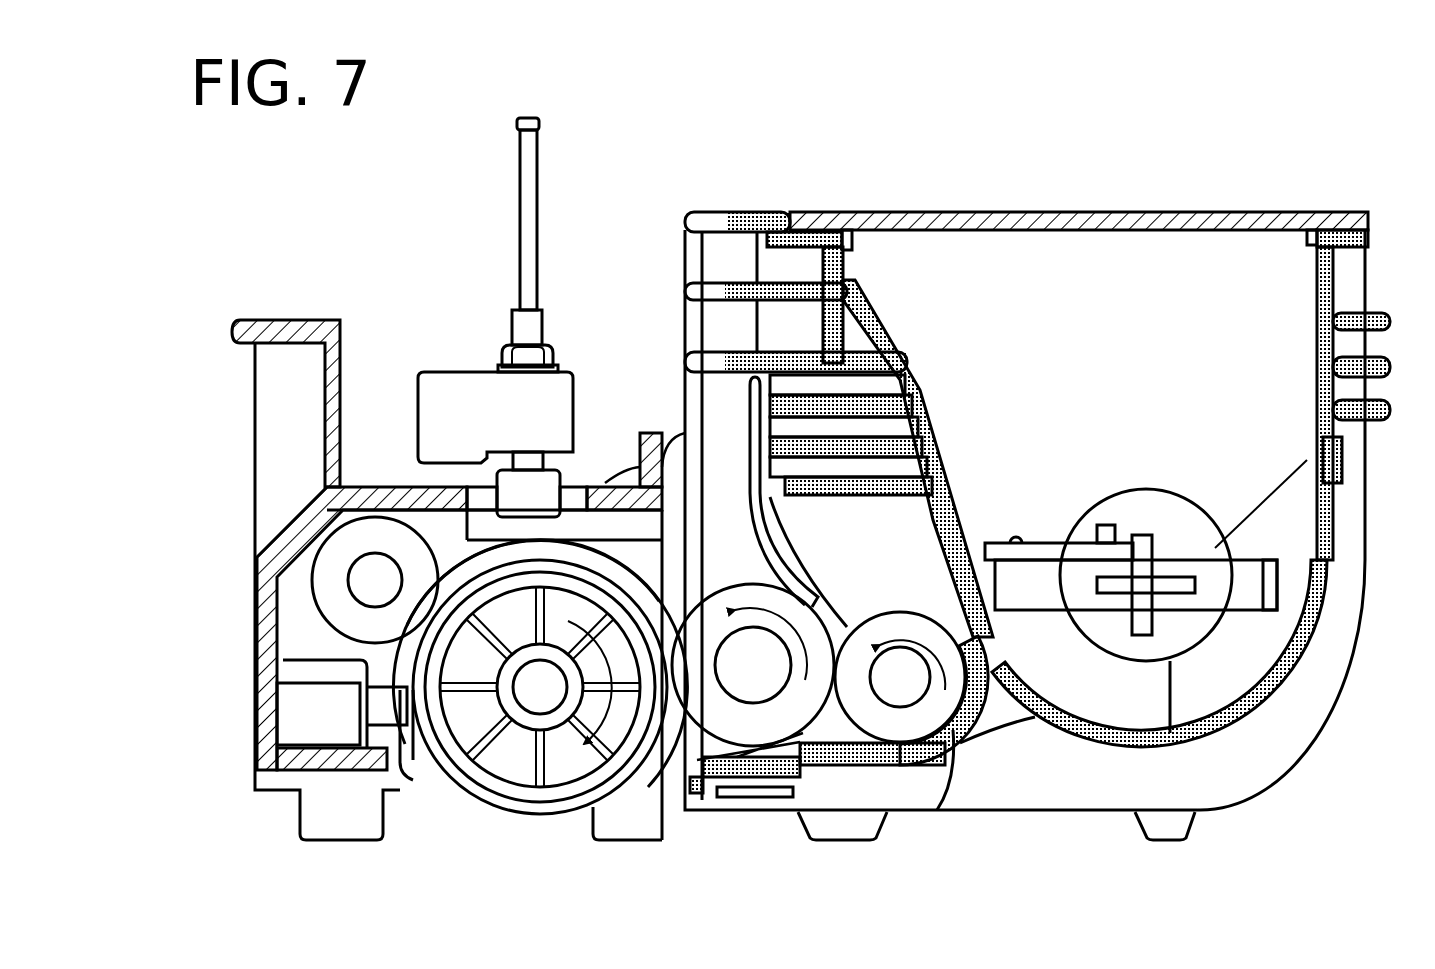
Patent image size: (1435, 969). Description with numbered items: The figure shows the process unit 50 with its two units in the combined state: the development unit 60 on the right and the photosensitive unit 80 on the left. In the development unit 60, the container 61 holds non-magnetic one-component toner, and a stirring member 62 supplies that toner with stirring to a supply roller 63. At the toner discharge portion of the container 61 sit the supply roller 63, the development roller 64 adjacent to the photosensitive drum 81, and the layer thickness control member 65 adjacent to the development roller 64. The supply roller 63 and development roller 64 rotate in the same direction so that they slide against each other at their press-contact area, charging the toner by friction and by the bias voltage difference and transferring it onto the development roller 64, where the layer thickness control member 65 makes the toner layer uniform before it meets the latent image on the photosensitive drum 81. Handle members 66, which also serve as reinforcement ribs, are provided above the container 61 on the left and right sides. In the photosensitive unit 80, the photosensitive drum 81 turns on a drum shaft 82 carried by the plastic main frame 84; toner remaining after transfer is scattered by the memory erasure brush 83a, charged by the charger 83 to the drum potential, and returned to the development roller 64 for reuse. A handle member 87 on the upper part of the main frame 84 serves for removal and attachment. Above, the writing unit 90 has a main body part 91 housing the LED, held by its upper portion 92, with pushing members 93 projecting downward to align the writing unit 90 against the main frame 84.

The process unit 50 is at (1205, 178).
The development unit 60 is at (1078, 140).
The container 61 is at (1322, 553).
The stirring member 62 is at (1208, 570).
The supply roller 63 is at (930, 712).
The development roller 64 is at (725, 593).
The layer thickness control member 65 is at (802, 568).
The handle members 66 is at (736, 200).
The photosensitive unit 80 is at (226, 597).
The photosensitive drum 81 is at (540, 709).
The drum shaft 82 is at (528, 686).
The charger 83 is at (345, 540).
The memory erasure brush 83a is at (405, 760).
The main frame 84 is at (262, 668).
The handle member 87 is at (232, 322).
The writing unit 90 is at (478, 332).
The main body part 91 is at (440, 387).
The upper portion 92 is at (528, 170).
The pushing members 93 is at (547, 497).